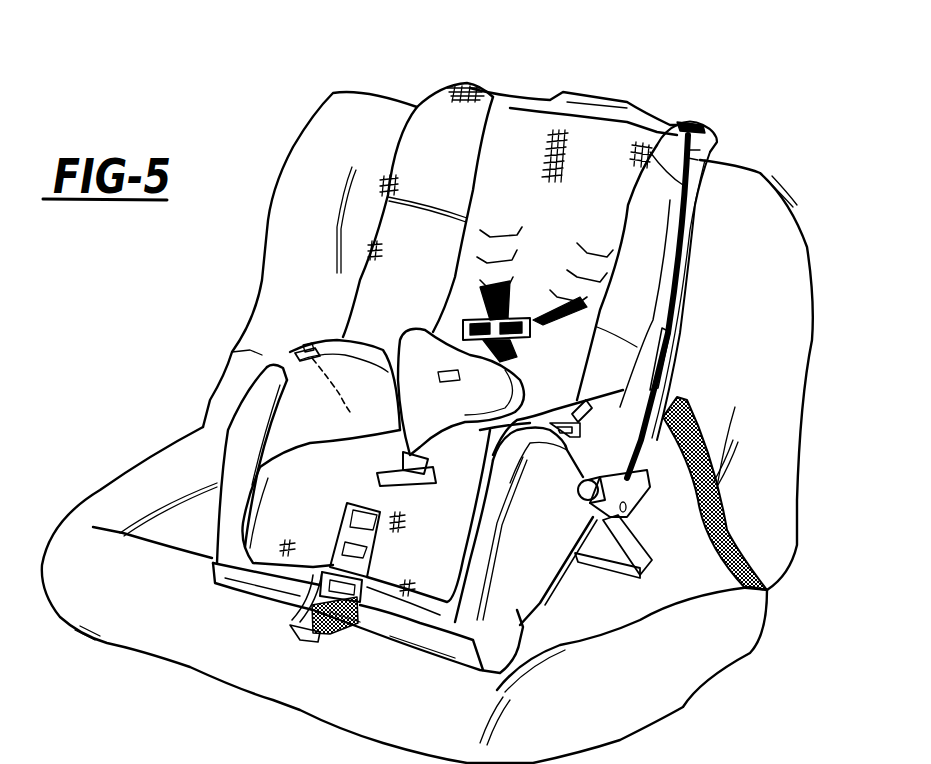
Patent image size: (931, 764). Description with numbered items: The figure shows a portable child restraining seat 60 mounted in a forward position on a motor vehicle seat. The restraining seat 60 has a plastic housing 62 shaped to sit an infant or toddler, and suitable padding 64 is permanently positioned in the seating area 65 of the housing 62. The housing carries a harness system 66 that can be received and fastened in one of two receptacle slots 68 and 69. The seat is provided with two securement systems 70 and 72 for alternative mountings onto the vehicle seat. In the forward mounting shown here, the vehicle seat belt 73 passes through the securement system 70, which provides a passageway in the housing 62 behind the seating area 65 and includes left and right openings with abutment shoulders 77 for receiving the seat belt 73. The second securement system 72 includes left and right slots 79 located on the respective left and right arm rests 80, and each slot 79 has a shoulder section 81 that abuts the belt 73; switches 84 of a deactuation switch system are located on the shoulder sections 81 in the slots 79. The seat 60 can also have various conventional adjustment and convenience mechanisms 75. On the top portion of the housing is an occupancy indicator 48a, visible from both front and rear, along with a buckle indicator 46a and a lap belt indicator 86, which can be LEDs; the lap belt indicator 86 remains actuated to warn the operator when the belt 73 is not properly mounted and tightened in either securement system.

The portable restraining seat 60 is at (348, 130).
The buckle indicator 46a is at (462, 88).
The occupancy indicator 48a is at (597, 100).
The lap belt indicator 86 is at (700, 125).
The abutment shoulders 77 is at (643, 420).
The securement system 70 is at (660, 385).
The vehicle seat belt 73 is at (733, 530).
The padding 64 is at (380, 407).
The harness system 66 is at (407, 350).
The receptacle slot 68 is at (400, 457).
The seating area 65 is at (457, 511).
The receptacle slot 69 is at (380, 487).
The plastic housing 62 is at (497, 601).
The arm rests 80 is at (318, 431).
The switches 84 is at (300, 347).
The shoulder section 81 is at (307, 347).
The securement system 72 is at (235, 353).
The slots 79 is at (645, 505).
The adjustment and convenience mechanisms 75 is at (640, 560).